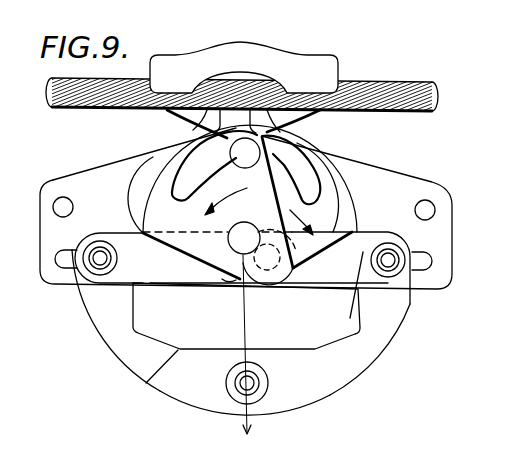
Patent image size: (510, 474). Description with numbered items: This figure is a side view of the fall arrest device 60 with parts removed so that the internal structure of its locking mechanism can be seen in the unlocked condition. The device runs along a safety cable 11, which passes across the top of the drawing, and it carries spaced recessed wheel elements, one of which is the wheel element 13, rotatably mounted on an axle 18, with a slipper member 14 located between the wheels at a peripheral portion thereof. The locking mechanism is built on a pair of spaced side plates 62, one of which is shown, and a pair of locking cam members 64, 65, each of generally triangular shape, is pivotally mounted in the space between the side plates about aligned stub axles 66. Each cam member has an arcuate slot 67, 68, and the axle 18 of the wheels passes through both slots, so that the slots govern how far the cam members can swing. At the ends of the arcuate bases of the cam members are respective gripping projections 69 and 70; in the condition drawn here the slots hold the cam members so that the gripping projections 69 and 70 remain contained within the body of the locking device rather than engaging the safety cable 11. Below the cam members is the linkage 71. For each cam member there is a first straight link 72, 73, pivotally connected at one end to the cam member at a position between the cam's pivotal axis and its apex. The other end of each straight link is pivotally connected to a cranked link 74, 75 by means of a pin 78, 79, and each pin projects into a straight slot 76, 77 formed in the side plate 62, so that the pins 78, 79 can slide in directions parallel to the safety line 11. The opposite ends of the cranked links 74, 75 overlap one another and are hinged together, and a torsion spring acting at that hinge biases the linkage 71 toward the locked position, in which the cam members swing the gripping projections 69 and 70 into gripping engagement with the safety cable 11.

The safety cable 11 is at (392, 88).
The wheel element 13 is at (297, 118).
The slipper member 14 is at (315, 65).
The axle 18 is at (238, 152).
The fall arrest device 60 is at (357, 70).
The side plate 62 is at (410, 184).
The locking cam member 64 is at (165, 188).
The locking cam member 65 is at (331, 212).
The stub axle 66 is at (242, 260).
The arcuate slot 67 is at (178, 153).
The arcuate slot 68 is at (300, 168).
The gripping projection 69 is at (137, 190).
The gripping projection 70 is at (342, 182).
The linkage 71 is at (173, 405).
The first straight link 72 is at (146, 290).
The first straight link 73 is at (328, 262).
The cranked link 74 is at (125, 355).
The cranked link 75 is at (348, 362).
The straight slot 76 is at (68, 270).
The straight slot 77 is at (425, 275).
The pin 78 is at (102, 265).
The pin 79 is at (388, 262).